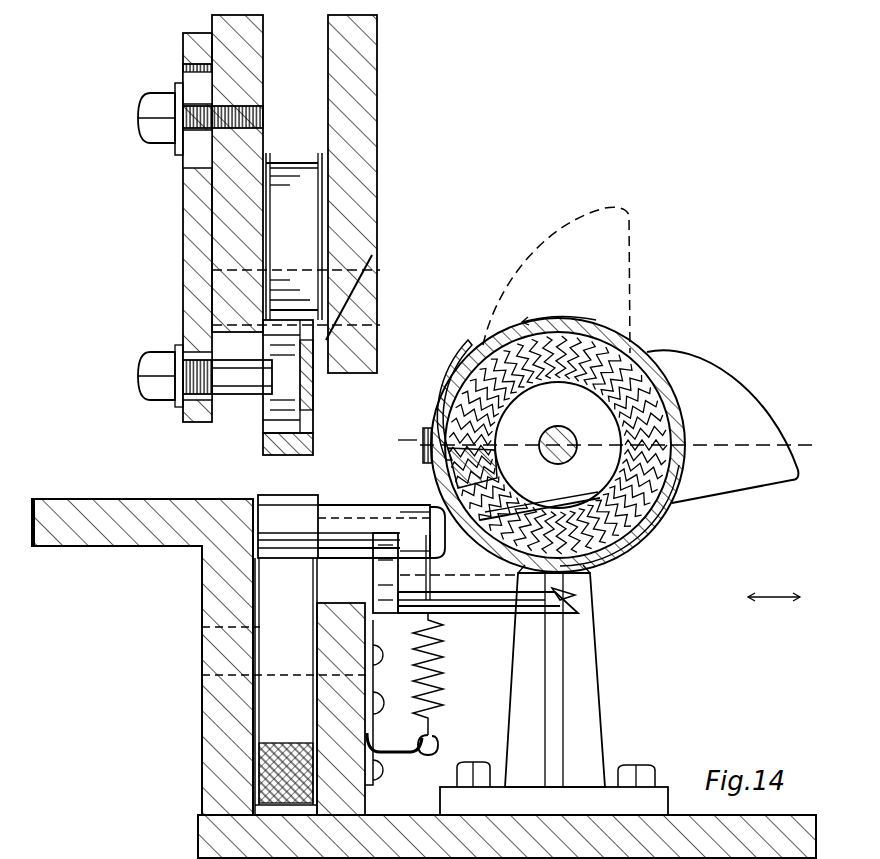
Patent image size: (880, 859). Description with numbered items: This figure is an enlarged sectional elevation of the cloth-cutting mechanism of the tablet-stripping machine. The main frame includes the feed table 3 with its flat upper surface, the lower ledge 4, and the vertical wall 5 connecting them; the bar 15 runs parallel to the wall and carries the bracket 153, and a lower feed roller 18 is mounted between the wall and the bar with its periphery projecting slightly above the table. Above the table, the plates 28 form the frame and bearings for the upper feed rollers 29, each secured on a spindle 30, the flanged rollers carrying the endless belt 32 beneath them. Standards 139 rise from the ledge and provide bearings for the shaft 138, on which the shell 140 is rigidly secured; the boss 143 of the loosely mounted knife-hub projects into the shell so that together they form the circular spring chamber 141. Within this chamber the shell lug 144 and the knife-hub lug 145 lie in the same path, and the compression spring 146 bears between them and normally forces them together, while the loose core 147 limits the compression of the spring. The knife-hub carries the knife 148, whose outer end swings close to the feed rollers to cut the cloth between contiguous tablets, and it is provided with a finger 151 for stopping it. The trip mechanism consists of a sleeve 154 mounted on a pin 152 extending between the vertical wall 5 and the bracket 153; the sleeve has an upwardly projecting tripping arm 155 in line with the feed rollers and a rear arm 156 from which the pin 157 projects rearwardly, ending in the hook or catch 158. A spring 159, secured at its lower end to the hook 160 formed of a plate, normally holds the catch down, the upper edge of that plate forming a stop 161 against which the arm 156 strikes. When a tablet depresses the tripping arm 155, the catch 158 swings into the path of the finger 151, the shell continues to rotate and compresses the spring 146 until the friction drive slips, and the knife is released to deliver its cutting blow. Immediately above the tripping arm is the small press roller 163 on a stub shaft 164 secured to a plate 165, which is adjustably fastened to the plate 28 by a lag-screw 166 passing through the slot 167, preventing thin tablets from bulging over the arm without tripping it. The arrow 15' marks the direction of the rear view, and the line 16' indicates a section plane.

The feed table 3 is at (35, 513).
The ledge 4 is at (808, 817).
The vertical wall 5 is at (205, 790).
The bar 15 is at (369, 709).
The bore 18 is at (286, 733).
The plates 28 is at (326, 24).
The upper feed rollers 29 is at (302, 168).
The spindles or shafts 30 is at (348, 330).
The endless belt 32 is at (268, 452).
The shaft 138 is at (558, 452).
The standards 139 is at (554, 694).
The shell 140 is at (620, 557).
The spring chamber 141 is at (640, 514).
The boss 143 is at (652, 535).
The lug 144 is at (470, 485).
The lug 145 is at (465, 457).
The compression spring 146 is at (468, 378).
The loose core 147 is at (607, 570).
The knife 148 is at (752, 488).
The finger 151 is at (426, 428).
The pin 152 is at (258, 528).
The bracket 153 is at (436, 556).
The sleeve 154 is at (350, 506).
The tripping arm 155 is at (284, 496).
The arm 156 is at (380, 577).
The pin 157 is at (470, 620).
The hook or catch 158 is at (577, 594).
The spring 159 is at (440, 674).
The hook 160 is at (445, 730).
The stop 161 is at (378, 627).
The press roller 163 is at (278, 410).
The stub shaft 164 is at (228, 395).
The plate 165 is at (182, 328).
The lag-screw 166 is at (136, 118).
The slot 167 is at (198, 74).
The section line 16' is at (597, 442).
The arrow 15' is at (774, 588).